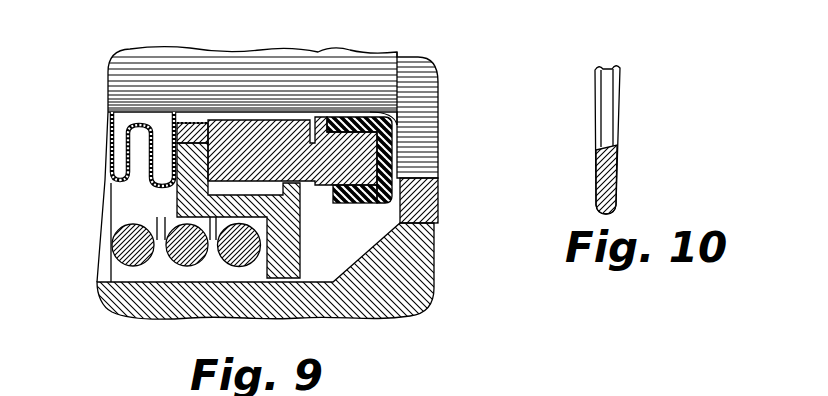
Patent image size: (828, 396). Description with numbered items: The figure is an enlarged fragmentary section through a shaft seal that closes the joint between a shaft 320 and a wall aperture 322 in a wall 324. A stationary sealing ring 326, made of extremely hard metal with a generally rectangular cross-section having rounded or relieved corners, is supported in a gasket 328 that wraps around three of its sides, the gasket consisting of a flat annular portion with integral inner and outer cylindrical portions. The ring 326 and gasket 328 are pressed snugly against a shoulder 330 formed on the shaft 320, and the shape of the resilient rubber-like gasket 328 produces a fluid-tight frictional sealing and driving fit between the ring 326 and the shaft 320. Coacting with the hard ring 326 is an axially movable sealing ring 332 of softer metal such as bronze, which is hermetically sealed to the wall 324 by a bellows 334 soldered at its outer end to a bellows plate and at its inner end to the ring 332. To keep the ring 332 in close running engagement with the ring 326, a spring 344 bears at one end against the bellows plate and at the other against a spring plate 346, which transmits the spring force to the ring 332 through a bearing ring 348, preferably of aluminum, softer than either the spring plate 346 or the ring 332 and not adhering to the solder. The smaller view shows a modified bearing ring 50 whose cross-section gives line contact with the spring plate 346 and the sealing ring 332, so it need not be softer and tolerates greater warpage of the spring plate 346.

In FIG. 9, the shaft 320 is at (425, 144).
In FIG. 9, the wall aperture 322 is at (432, 212).
In FIG. 9, the wall 324 is at (418, 270).
In FIG. 9, the stationary sealing ring 326 is at (398, 127).
In FIG. 9, the gasket 328 is at (388, 200).
In FIG. 9, the shoulder 330 is at (397, 82).
In FIG. 9, the axially movable sealing ring 332 is at (291, 125).
In FIG. 9, the bellows 334 is at (128, 150).
In FIG. 9, the spring 344 is at (128, 238).
In FIG. 9, the spring plate 346 is at (283, 268).
In FIG. 9, the bearing ring 348 is at (210, 140).
In FIG. 10, the blade 50 is at (608, 173).